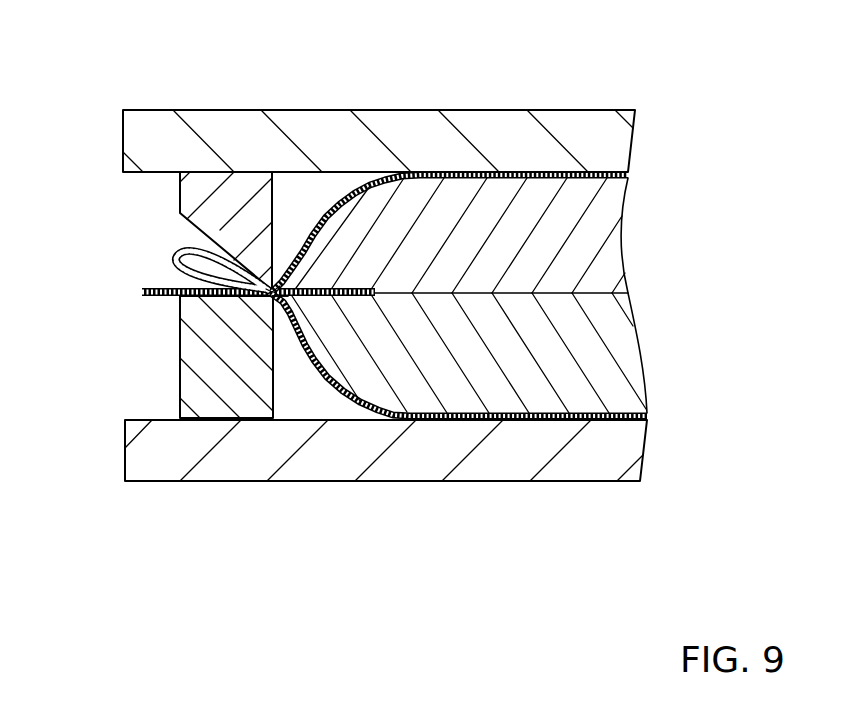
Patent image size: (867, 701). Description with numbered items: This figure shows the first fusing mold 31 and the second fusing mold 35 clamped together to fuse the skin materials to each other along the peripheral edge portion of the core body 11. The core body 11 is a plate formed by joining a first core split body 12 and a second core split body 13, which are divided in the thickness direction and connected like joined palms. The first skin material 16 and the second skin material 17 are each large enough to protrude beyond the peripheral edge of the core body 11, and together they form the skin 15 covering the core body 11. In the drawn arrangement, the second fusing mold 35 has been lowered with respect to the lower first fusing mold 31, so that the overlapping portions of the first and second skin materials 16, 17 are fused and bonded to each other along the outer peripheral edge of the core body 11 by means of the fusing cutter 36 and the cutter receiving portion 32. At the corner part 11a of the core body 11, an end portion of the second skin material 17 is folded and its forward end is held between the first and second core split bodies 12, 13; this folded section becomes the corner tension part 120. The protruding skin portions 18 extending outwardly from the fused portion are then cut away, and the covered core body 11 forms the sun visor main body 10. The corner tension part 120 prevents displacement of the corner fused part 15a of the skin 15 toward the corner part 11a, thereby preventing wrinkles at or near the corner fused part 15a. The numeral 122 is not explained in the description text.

The sun visor main body 10 is at (583, 172).
The core body 11 is at (496, 399).
The first core split body 12 is at (588, 402).
The second core split body 13 is at (610, 268).
The skin 15 is at (459, 384).
The first skin material 16 is at (537, 402).
The second skin material 17 is at (462, 178).
The corner fused part 15a is at (271, 290).
The corner part 11a is at (280, 288).
The protruding skin portion 18 is at (140, 290).
The first fusing mold 31 is at (357, 453).
The cutter receiving portion 32 is at (193, 331).
The second fusing mold 35 is at (470, 130).
The fusing cutter 36 is at (222, 215).
The corner tension part 120 is at (287, 296).
The pressing surface 122 is at (227, 297).